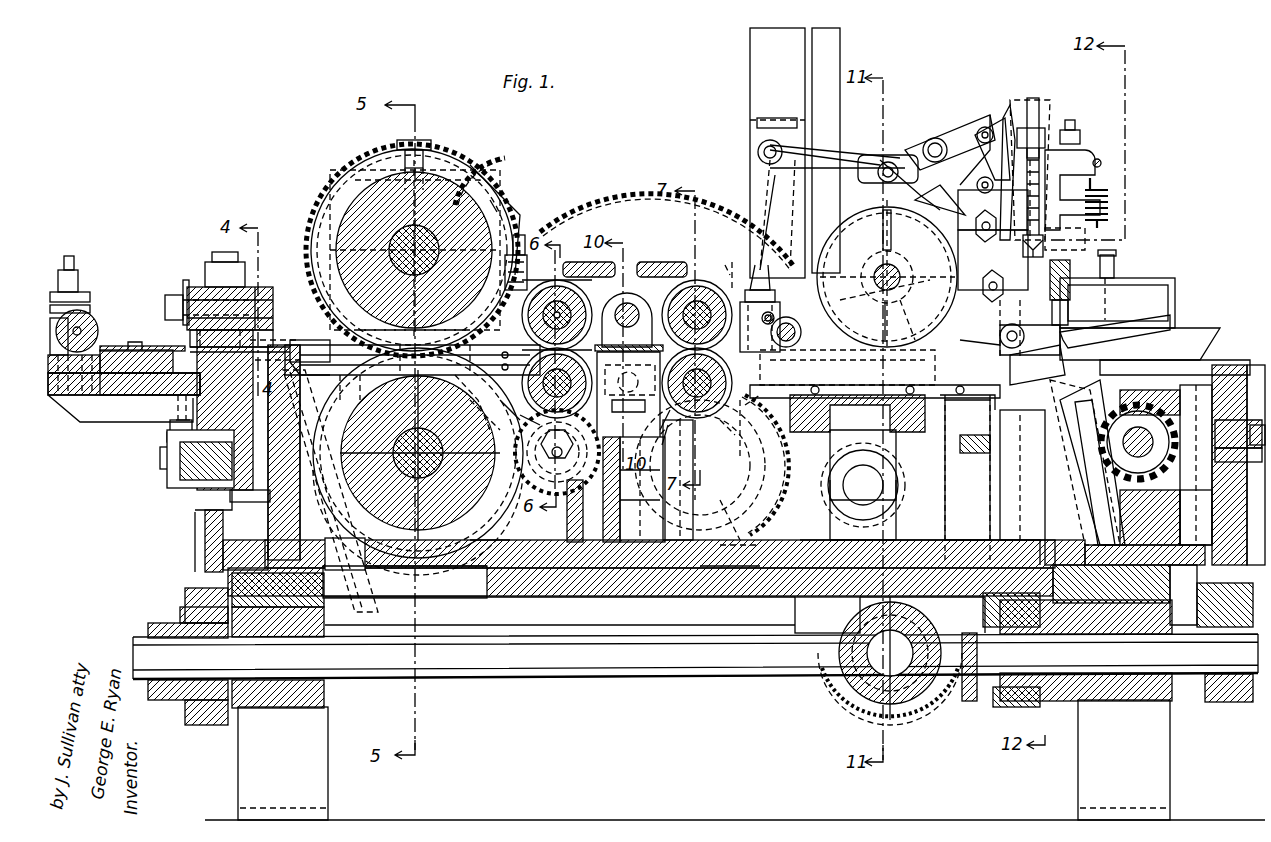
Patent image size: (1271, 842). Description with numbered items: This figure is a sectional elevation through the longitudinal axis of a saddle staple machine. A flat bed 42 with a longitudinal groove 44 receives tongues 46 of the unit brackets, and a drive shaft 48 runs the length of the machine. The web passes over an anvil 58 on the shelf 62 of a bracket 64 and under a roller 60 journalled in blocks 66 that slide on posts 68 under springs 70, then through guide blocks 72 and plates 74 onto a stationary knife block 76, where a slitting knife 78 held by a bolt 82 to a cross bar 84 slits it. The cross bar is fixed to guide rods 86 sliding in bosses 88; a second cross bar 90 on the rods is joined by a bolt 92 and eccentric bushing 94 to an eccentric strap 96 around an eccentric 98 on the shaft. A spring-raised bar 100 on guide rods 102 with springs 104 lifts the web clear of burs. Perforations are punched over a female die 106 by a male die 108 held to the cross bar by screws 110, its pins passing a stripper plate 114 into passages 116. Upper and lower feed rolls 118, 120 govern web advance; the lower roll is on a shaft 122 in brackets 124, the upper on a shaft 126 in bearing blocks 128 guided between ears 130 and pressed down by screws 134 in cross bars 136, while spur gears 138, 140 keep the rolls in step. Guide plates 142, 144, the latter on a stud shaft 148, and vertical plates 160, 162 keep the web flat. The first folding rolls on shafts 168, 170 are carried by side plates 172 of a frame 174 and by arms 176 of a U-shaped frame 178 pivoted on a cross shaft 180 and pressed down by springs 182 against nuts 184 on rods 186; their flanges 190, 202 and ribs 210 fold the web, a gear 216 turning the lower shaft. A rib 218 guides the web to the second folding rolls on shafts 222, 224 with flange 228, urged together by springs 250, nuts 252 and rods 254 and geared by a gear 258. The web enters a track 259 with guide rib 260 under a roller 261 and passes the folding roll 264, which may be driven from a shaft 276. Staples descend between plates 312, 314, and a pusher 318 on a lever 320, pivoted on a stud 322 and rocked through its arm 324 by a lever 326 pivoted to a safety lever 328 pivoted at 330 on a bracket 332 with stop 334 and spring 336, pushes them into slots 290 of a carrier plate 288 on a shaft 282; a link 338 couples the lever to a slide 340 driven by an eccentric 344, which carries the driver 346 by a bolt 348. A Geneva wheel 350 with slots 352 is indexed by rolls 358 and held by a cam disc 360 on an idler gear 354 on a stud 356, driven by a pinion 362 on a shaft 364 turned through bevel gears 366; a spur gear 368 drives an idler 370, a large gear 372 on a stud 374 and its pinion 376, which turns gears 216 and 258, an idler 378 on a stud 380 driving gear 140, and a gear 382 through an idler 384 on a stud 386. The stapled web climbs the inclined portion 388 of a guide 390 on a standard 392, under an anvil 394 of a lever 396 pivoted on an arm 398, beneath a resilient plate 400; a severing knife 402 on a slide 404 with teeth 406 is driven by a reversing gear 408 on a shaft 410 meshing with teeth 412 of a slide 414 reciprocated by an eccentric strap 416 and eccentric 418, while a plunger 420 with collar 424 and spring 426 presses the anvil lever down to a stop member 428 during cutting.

The base plate 42 is at (565, 580).
The base plate portion 44 is at (478, 580).
The bed 46 is at (520, 580).
The main shaft 48 is at (625, 660).
The bracket 58 is at (80, 422).
The roller 60 is at (84, 320).
The slide block 62 is at (120, 398).
The frame upright 64 is at (268, 520).
The bolts 66 is at (67, 372).
The adjusting screw 68 is at (58, 275).
The nut 70 is at (52, 320).
The slide 72 is at (108, 350).
The lug 74 is at (152, 350).
The pin 76 is at (174, 409).
The plate 78 is at (185, 283).
The bolt 82 is at (168, 298).
The cap 84 is at (212, 262).
The screw 86 is at (228, 505).
The bracket 88 is at (195, 512).
The plate 90 is at (168, 443).
The bolt 92 is at (160, 471).
The bearing block 94 is at (178, 455).
The frame wall 96 is at (205, 552).
The hub 98 is at (180, 612).
The plate 100 is at (180, 346).
The nut 102 is at (170, 428).
The slide block 104 is at (168, 398).
The plate 106 is at (285, 345).
The block 108 is at (273, 325).
The housing 110 is at (262, 287).
The housing wall 114 is at (273, 296).
The column 116 is at (239, 410).
The gear 118 is at (332, 192).
The plate 120 is at (408, 560).
The disk 122 is at (333, 440).
The plate 124 is at (488, 538).
The disk 126 is at (355, 225).
The hub 128 is at (345, 240).
The ring 130 is at (492, 212).
The screw 134 is at (428, 145).
The arm 136 is at (503, 200).
The pinion 138 is at (490, 175).
The lever 140 is at (410, 595).
The slide bar 142 is at (372, 345).
The housing 144 is at (335, 395).
The ring 148 is at (325, 420).
The block 160 is at (318, 345).
The link 162 is at (472, 398).
The roller 168 is at (580, 320).
The link 170 is at (484, 406).
The pin 172 is at (517, 431).
The frame 174 is at (722, 580).
The pin 176 is at (631, 320).
The roller frame 178 is at (562, 280).
The roller 180 is at (680, 300).
The roller 182 is at (557, 304).
The pin 184 is at (522, 235).
The spring 186 is at (509, 251).
The cam 190 is at (535, 452).
The cap 202 is at (589, 260).
The cap 210 is at (650, 262).
The link 216 is at (503, 411).
The pin 218 is at (680, 427).
The pin 222 is at (717, 273).
The roller 224 is at (710, 412).
The rack 228 is at (629, 338).
The block 250 is at (742, 300).
The plate 252 is at (748, 290).
The spring 254 is at (752, 265).
The lever 258 is at (732, 430).
The pin 259 is at (761, 411).
The slide 260 is at (1050, 420).
The pin 261 is at (772, 332).
The shaft 264 is at (872, 320).
The hub 276 is at (885, 490).
The arm 282 is at (883, 298).
The gear 288 is at (906, 320).
The pin 290 is at (880, 215).
The column 312 is at (750, 52).
The column 314 is at (840, 55).
The pin 318 is at (774, 310).
The link 320 is at (768, 182).
The lever 322 is at (758, 150).
The pivot 324 is at (860, 150).
The link 326 is at (922, 140).
The link 328 is at (990, 125).
The arm 330 is at (1010, 105).
The block 332 is at (958, 205).
The nut 334 is at (1078, 128).
The spring 336 is at (1110, 197).
The pin 338 is at (985, 128).
The cam 340 is at (940, 200).
The bolt 344 is at (975, 700).
The rod 346 is at (1000, 318).
The nut 348 is at (993, 266).
The pin 350 is at (905, 160).
The plate 352 is at (969, 409).
The gear 354 is at (775, 470).
The ring 356 is at (902, 465).
The housing 358 is at (965, 470).
The slide 360 is at (960, 485).
The housing 362 is at (830, 680).
The gear 364 is at (850, 700).
The gear 366 is at (935, 710).
The gear 368 is at (887, 275).
The rod 370 is at (790, 150).
The gear 372 is at (600, 220).
The pin 374 is at (681, 446).
The nut 376 is at (564, 449).
The post 378 is at (618, 488).
The post 380 is at (618, 505).
The bracket 382 is at (895, 415).
The lever 384 is at (714, 520).
The pin 386 is at (735, 540).
The arm 388 is at (1100, 345).
The table 390 is at (1195, 340).
The housing 392 is at (1222, 500).
The block 394 is at (1040, 350).
The pivot 396 is at (1030, 331).
The rod 398 is at (969, 335).
The block 400 is at (1140, 325).
The lever 402 is at (1080, 430).
The rod 404 is at (1100, 520).
The bar 406 is at (1110, 490).
The gear 408 is at (1165, 430).
The shaft 410 is at (1153, 440).
The rack 412 is at (1212, 478).
The slide 414 is at (1200, 520).
The wall 416 is at (1225, 545).
The bearing 418 is at (1247, 590).
The rod 420 is at (1033, 100).
The nut 424 is at (1045, 252).
The arm 426 is at (1068, 162).
The spring 428 is at (1062, 300).